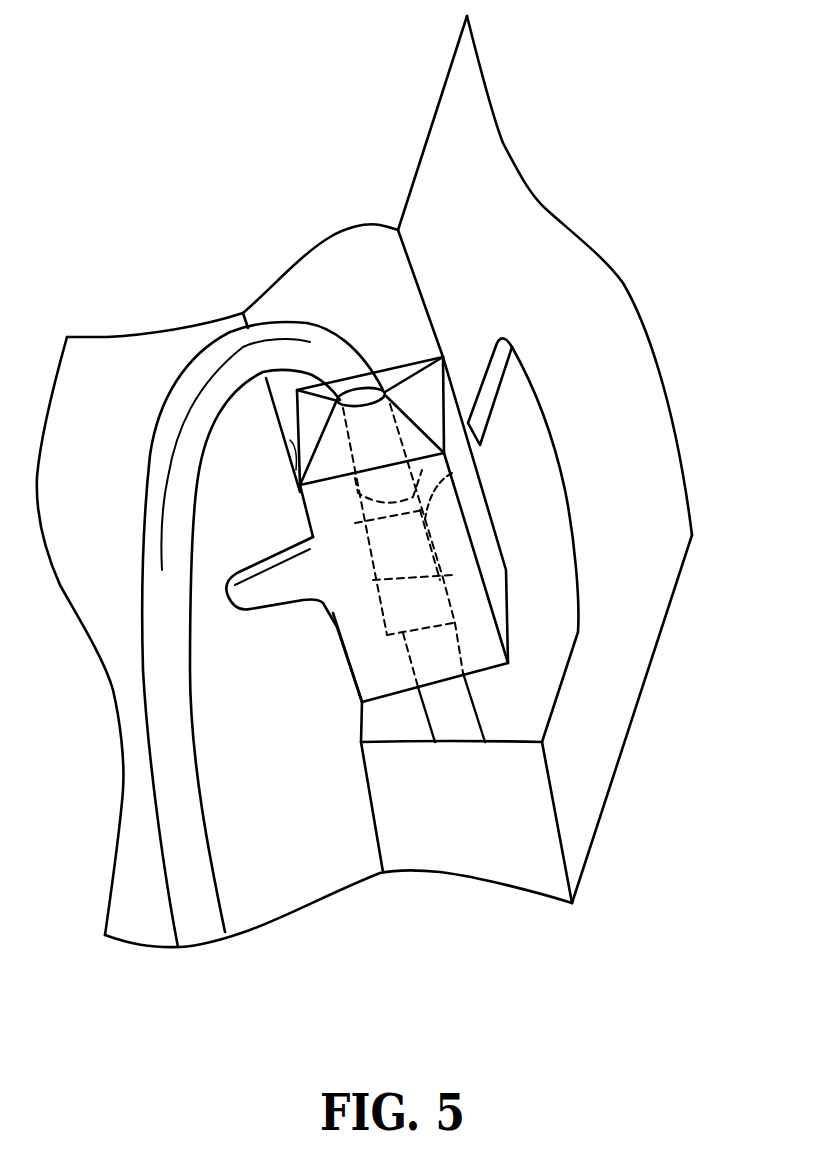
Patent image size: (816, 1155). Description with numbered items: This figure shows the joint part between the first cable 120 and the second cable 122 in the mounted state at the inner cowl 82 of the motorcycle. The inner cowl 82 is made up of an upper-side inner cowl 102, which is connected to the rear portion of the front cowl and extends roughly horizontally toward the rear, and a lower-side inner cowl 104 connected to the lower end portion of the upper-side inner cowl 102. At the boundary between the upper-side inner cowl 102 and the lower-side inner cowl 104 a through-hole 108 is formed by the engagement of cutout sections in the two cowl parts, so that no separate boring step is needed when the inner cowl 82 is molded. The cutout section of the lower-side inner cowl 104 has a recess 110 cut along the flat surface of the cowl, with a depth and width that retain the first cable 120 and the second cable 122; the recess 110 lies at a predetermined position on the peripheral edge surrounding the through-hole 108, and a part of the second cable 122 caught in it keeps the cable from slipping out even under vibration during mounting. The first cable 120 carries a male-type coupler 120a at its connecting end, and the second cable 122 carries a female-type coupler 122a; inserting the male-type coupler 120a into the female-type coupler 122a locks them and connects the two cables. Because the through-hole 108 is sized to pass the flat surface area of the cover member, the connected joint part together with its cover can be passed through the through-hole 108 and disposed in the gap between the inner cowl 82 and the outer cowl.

The inner cowl 82 is at (382, 153).
The upper-side inner cowl 102 is at (430, 172).
The lower-side inner cowl 104 is at (330, 265).
The through-hole 108 is at (550, 512).
The recess (locking section) 110 is at (243, 597).
The first cable 120 is at (168, 745).
The male-type coupler 120a is at (452, 473).
The second cable 122 is at (462, 718).
The female-type coupler 122a is at (453, 575).